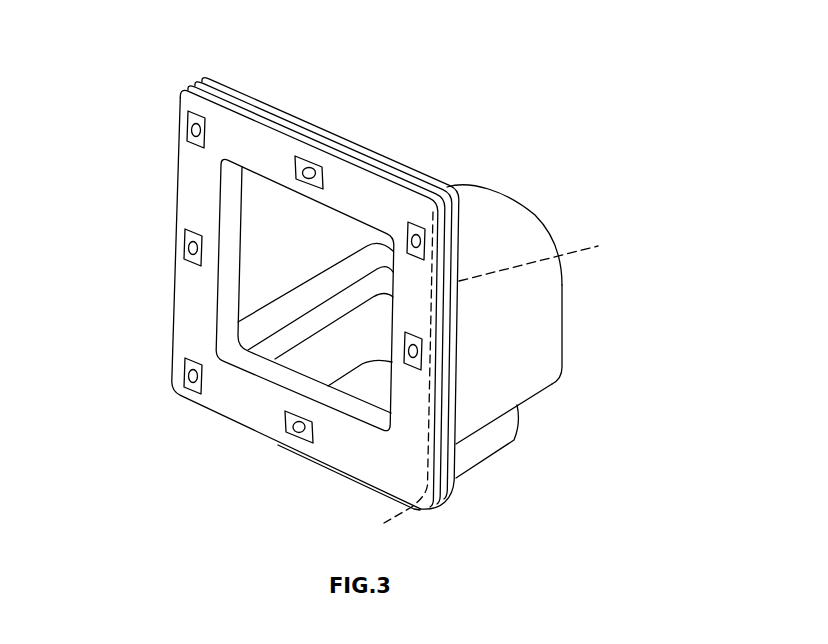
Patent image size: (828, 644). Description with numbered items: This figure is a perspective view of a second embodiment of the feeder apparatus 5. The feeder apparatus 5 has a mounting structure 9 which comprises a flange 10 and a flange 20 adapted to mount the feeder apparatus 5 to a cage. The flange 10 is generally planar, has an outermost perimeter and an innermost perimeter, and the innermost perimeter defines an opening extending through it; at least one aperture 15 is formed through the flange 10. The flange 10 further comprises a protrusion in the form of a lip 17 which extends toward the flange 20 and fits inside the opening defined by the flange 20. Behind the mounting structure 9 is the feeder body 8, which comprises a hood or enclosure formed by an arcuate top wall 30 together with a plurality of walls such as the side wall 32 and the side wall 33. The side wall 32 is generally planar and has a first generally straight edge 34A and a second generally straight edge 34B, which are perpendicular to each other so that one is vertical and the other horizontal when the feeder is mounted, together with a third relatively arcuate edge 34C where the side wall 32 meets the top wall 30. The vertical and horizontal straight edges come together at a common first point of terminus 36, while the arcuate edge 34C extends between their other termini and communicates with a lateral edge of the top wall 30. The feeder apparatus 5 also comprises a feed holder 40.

The feeder apparatus 5 is at (388, 111).
The feeder body 8 is at (463, 167).
The mounting structure 9 is at (347, 456).
The flange 10 is at (178, 158).
The aperture 15 is at (192, 376).
The lip 17 is at (251, 361).
The flange 20 is at (199, 76).
The arcuate top wall 30 is at (406, 150).
The side wall 32 is at (522, 320).
The side wall 33 is at (285, 259).
The first generally straight edge 34A is at (546, 258).
The second generally straight edge 34B is at (533, 393).
The third relatively arcuate edge 34C is at (563, 288).
The first point of terminus 36 is at (394, 373).
The feed holder 40 is at (493, 440).